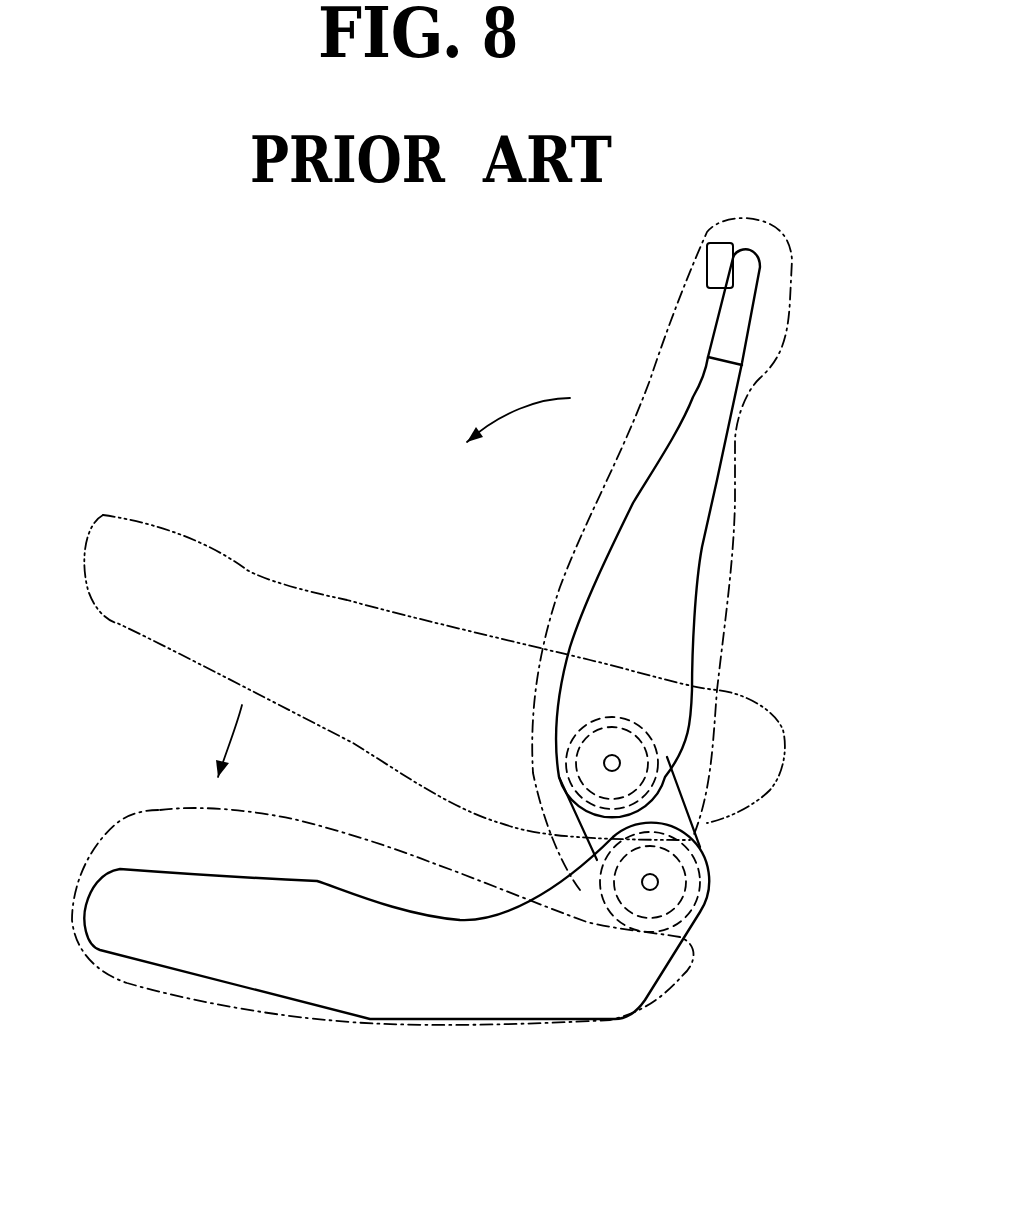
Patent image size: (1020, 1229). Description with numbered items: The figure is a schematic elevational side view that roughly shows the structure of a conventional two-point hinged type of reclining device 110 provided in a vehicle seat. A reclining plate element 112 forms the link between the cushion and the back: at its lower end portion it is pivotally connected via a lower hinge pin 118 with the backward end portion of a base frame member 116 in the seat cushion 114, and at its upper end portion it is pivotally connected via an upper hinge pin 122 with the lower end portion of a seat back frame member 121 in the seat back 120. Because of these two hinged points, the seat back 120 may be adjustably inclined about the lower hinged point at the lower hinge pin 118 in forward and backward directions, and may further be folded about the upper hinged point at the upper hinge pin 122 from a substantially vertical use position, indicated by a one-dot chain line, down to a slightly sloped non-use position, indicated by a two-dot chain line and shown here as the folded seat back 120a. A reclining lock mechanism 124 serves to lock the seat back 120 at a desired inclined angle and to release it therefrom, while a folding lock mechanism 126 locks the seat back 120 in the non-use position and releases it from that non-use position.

The reclining device 110 is at (778, 690).
The reclining plate element 112 is at (663, 815).
The seat cushion 114 is at (188, 1000).
The base frame member 116 is at (575, 1000).
The lower hinge pin 118 is at (658, 882).
The seat back 120 is at (735, 540).
The seat back in folded position 120a is at (298, 588).
The seat back frame member 121 is at (643, 528).
The upper hinge pin 122 is at (604, 763).
The reclining lock mechanism 124 is at (703, 913).
The folding lock mechanism 126 is at (663, 745).